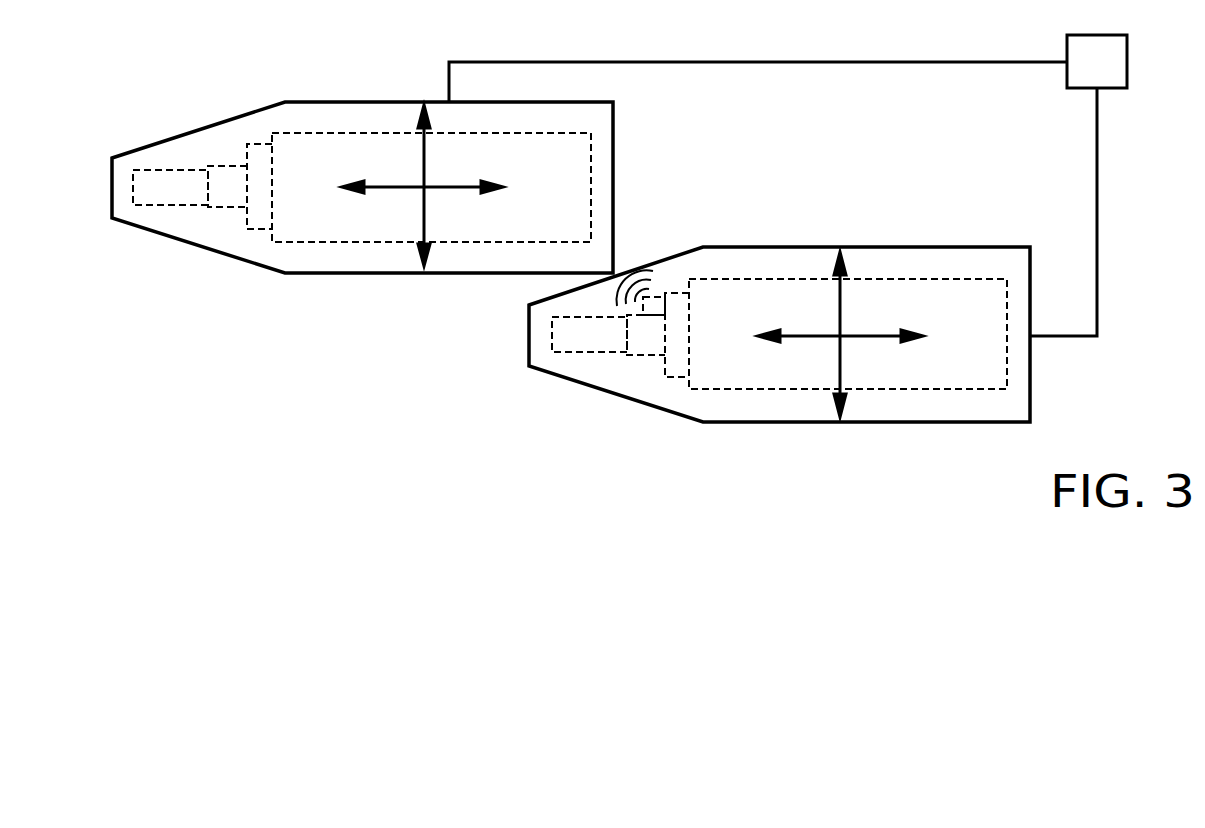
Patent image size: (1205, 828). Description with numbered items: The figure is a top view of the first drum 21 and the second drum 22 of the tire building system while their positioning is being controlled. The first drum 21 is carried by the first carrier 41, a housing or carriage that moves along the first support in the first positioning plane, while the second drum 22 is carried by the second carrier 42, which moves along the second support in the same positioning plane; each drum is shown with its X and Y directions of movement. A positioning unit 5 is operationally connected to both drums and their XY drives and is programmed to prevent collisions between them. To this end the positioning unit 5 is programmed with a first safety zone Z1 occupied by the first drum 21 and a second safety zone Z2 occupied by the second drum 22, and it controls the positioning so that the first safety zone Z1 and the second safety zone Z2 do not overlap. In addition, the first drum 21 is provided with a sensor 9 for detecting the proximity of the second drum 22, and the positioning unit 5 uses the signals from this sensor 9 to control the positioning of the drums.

The positioning unit 5 is at (788, 185).
The sensor 9 is at (663, 278).
The first drum 21 is at (778, 375).
The second drum 22 is at (352, 230).
The first carrier 41 is at (582, 338).
The second carrier 42 is at (163, 187).
The first safety zone Z1 is at (660, 410).
The second safety zone Z2 is at (445, 273).